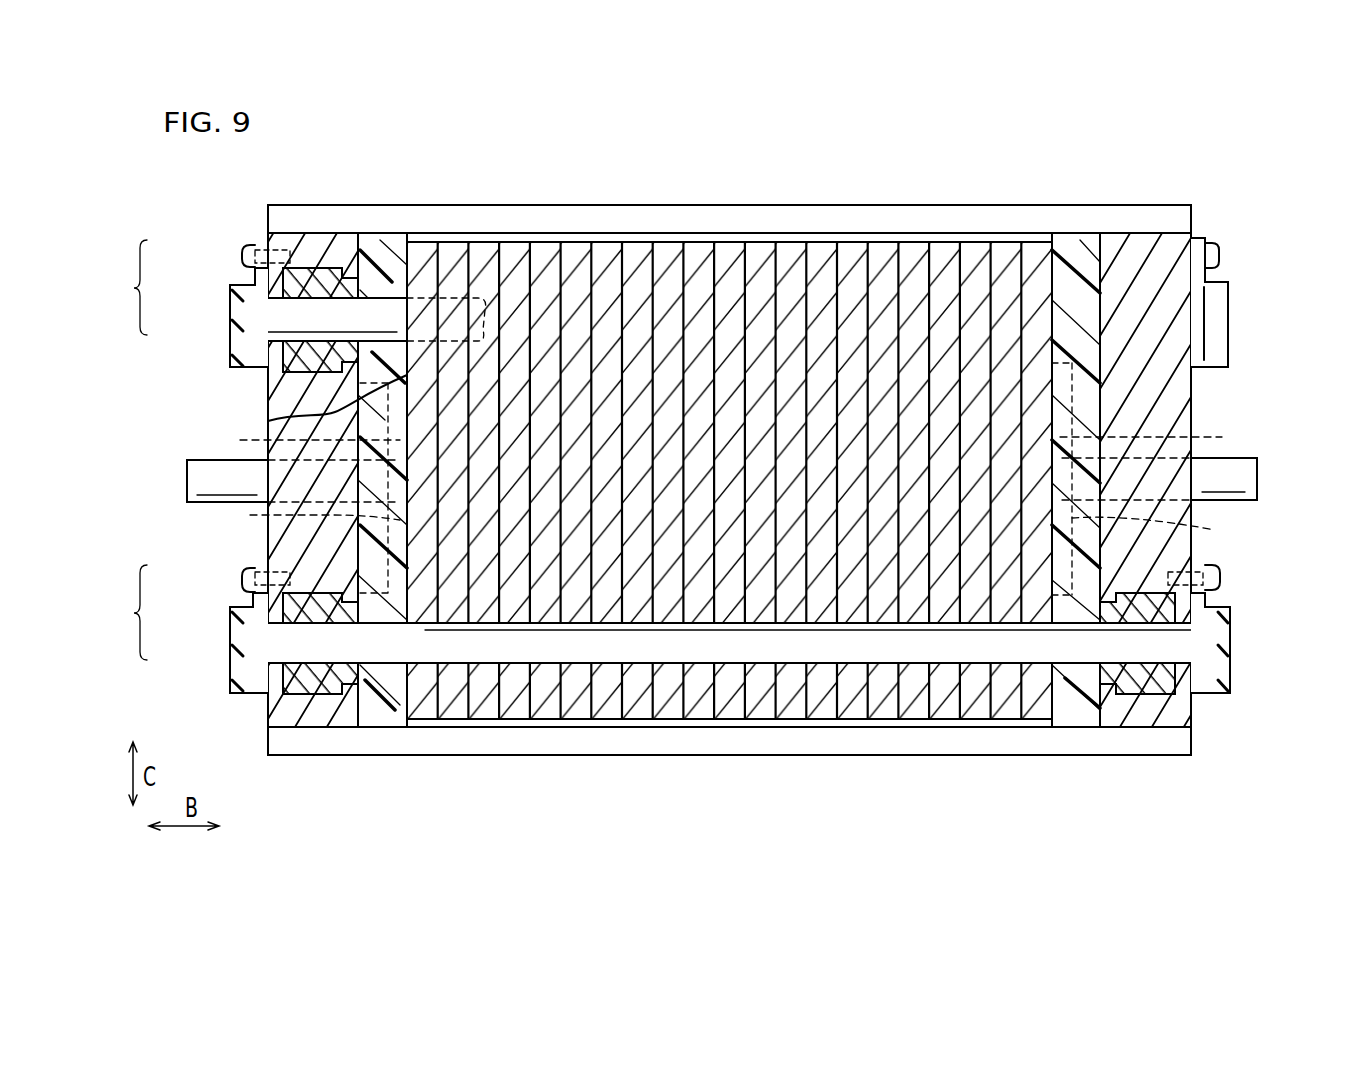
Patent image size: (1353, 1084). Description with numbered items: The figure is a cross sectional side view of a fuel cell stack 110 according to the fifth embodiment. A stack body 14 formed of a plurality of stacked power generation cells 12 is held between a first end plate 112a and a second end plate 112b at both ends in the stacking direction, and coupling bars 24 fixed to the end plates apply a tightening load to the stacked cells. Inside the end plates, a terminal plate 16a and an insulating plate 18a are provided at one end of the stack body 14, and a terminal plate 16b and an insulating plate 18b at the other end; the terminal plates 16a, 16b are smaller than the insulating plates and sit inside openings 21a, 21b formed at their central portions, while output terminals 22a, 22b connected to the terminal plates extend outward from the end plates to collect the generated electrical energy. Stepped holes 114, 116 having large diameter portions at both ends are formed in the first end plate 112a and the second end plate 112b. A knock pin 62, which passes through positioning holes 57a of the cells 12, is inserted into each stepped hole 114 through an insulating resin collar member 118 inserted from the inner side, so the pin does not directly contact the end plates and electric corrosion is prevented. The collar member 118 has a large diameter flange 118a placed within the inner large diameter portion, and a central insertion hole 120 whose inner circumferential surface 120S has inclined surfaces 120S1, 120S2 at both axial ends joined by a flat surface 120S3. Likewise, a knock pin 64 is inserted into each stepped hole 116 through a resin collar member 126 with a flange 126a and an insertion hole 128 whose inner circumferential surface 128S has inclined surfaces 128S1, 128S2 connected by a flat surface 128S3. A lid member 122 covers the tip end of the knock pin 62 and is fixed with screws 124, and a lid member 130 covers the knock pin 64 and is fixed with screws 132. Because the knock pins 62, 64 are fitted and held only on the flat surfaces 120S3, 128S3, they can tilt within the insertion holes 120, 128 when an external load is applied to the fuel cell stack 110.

The fuel cell stack 110 is at (970, 150).
The first end plate 112a is at (294, 230).
The second end plate 112b is at (1170, 231).
The stack body 14 is at (630, 157).
The power generation cell 12 is at (545, 242).
The insulating plate 18a is at (393, 250).
The insulating plate 18b is at (1073, 248).
The coupling bar 24 is at (478, 225).
The insertion hole 128 is at (375, 300).
The inner circumferential surface 128S is at (161, 272).
The inclined surface 128S1 is at (253, 328).
The inclined surface 128S2 is at (300, 282).
The flat surface 128S3 is at (323, 352).
The knock pin 64 is at (257, 330).
The resin collar member 126 is at (344, 300).
The flange 126a is at (329, 272).
The screw 132 is at (248, 258).
The stepped hole 116 is at (325, 350).
The lid member 130 is at (237, 350).
The terminal plate 16a is at (300, 440).
The terminal plate 16b is at (1159, 438).
The opening 21a is at (305, 517).
The opening 21b is at (1161, 526).
The output terminal 22a is at (203, 480).
The output terminal 22b is at (1258, 480).
The stepped hole 114 is at (300, 690).
The insertion hole 120 is at (350, 695).
The resin collar member 118 is at (332, 692).
The flange 118a is at (325, 687).
The inner circumferential surface 120S is at (161, 597).
The inclined surface 120S1 is at (255, 653).
The inclined surface 120S2 is at (300, 605).
The flat surface 120S3 is at (325, 660).
The screw 124 is at (248, 580).
The lid member 122 is at (237, 673).
The knock pin 62 is at (518, 645).
The positioning hole 57a is at (655, 612).